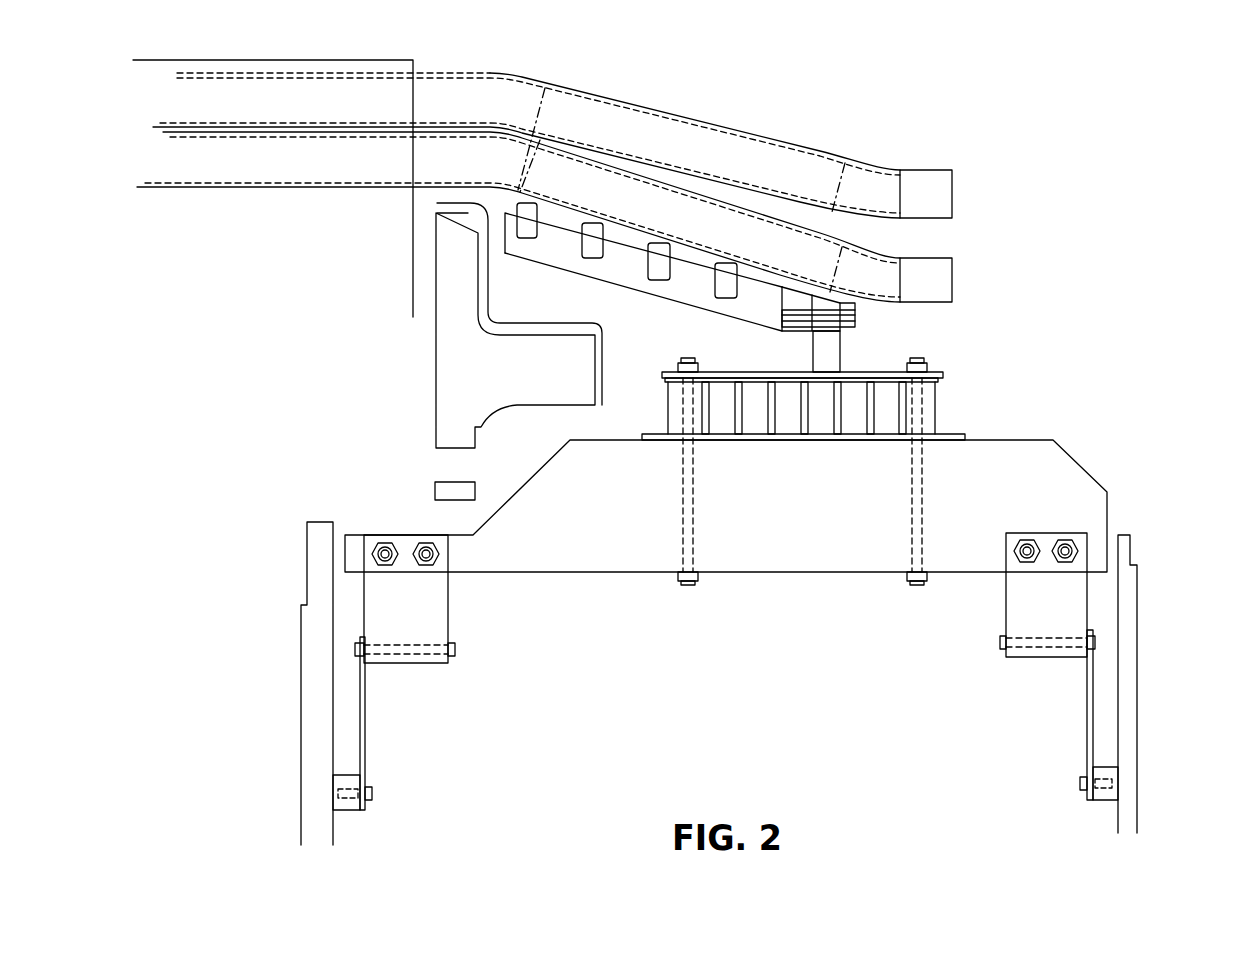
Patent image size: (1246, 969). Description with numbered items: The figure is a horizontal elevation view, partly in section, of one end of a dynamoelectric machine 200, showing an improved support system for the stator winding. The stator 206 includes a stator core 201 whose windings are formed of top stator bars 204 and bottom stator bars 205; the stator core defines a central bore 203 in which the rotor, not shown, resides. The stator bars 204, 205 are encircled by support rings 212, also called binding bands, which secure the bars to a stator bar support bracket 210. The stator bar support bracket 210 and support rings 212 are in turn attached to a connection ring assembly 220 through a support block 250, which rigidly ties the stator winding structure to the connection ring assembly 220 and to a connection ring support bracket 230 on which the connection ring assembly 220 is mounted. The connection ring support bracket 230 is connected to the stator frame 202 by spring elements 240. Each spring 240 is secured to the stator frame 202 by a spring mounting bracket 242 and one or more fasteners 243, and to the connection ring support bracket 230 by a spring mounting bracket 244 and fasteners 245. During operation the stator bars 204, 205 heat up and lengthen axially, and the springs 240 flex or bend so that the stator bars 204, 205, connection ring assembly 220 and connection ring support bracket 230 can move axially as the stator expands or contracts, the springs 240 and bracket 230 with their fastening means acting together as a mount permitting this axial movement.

The dynamoelectric machine 200 is at (1010, 108).
The stator core 201 is at (260, 334).
The stator frame 202 is at (306, 605).
The central bore 203 is at (348, 60).
The top stator bars 204 is at (308, 114).
The bottom stator bars 205 is at (303, 174).
The stator 206 is at (205, 487).
The stator bar support bracket 210 is at (633, 290).
The support rings 212 is at (720, 290).
The connection ring assembly 220 is at (972, 392).
The connection ring support bracket 230 is at (823, 515).
The spring elements 240 is at (366, 700).
The spring mounting bracket 242 is at (347, 803).
The fasteners 243 is at (373, 793).
The spring mounting bracket 244 is at (428, 614).
The fasteners 245 is at (451, 649).
The support block 250 is at (832, 342).